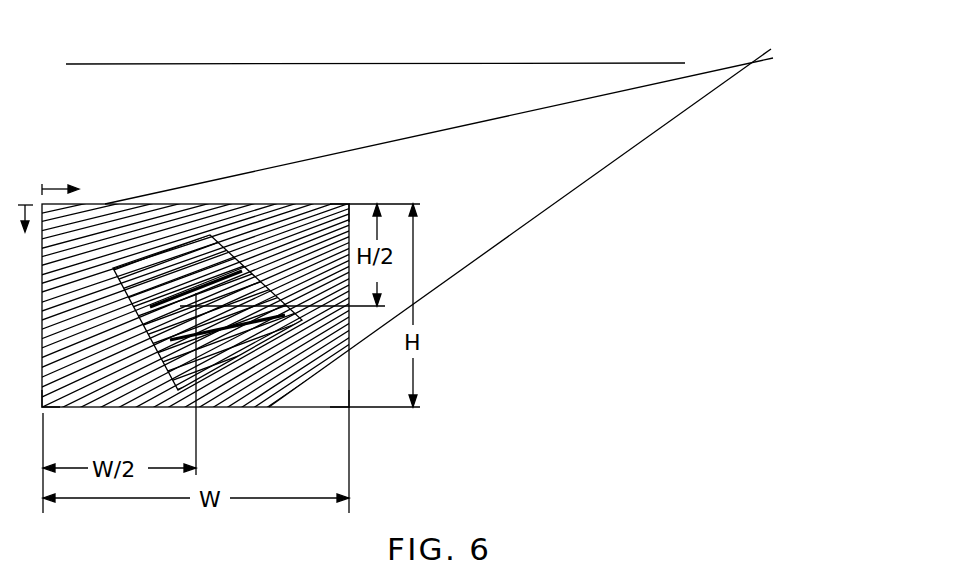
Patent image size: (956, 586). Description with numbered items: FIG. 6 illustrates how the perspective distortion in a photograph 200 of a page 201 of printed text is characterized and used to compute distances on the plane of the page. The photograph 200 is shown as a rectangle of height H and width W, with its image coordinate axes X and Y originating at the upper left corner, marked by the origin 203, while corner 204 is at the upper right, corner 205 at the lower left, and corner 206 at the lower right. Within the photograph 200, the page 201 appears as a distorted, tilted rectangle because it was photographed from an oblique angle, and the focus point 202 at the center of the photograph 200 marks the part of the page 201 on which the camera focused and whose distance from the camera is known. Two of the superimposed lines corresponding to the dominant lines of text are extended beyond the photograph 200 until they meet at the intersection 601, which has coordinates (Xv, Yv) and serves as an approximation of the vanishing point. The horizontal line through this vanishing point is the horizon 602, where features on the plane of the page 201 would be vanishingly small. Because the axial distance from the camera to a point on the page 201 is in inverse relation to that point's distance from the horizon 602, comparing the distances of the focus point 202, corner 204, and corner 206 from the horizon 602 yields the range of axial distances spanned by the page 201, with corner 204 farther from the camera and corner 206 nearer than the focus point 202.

The photograph 200 is at (324, 409).
The page 201 is at (147, 331).
The focus point 202 is at (233, 279).
The image coordinate origin and axes 203 is at (69, 164).
The corner 204 is at (347, 204).
The lower left corner of image frame 205 is at (48, 409).
The corner 206 is at (352, 409).
The intersection 601 is at (743, 49).
The horizon 602 is at (155, 64).